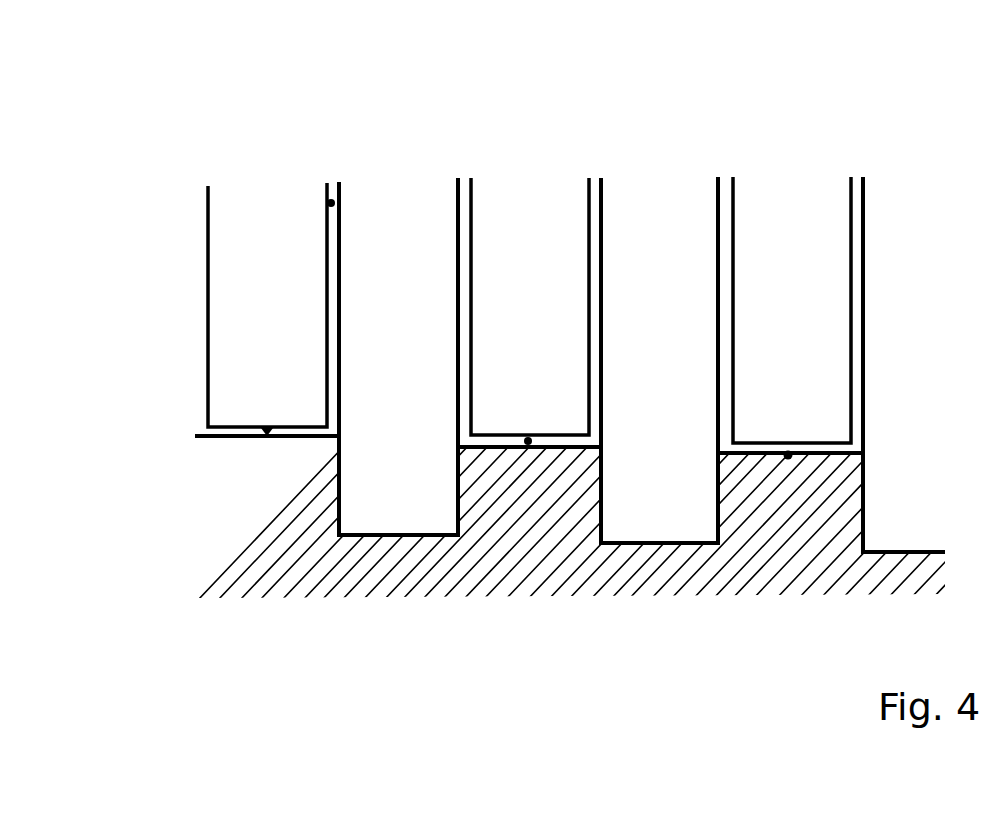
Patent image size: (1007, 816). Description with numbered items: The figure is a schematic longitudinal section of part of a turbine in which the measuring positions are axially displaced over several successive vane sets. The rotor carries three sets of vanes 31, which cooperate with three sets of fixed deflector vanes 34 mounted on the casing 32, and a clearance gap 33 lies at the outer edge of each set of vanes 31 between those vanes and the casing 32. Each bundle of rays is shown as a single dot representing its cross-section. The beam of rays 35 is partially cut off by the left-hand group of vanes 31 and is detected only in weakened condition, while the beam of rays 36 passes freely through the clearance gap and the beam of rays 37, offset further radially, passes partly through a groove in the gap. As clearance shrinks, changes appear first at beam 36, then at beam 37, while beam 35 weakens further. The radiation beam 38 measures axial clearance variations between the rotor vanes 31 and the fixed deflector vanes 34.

The sets of vanes 31 is at (265, 208).
The casing 32 is at (327, 558).
The clearance gap 33 is at (213, 433).
The fixed deflector vanes 34 is at (397, 198).
The beam of rays 35 is at (267, 434).
The beam of rays 36 is at (528, 442).
The beam of rays 37 is at (788, 455).
The radiation beam 38 is at (326, 183).